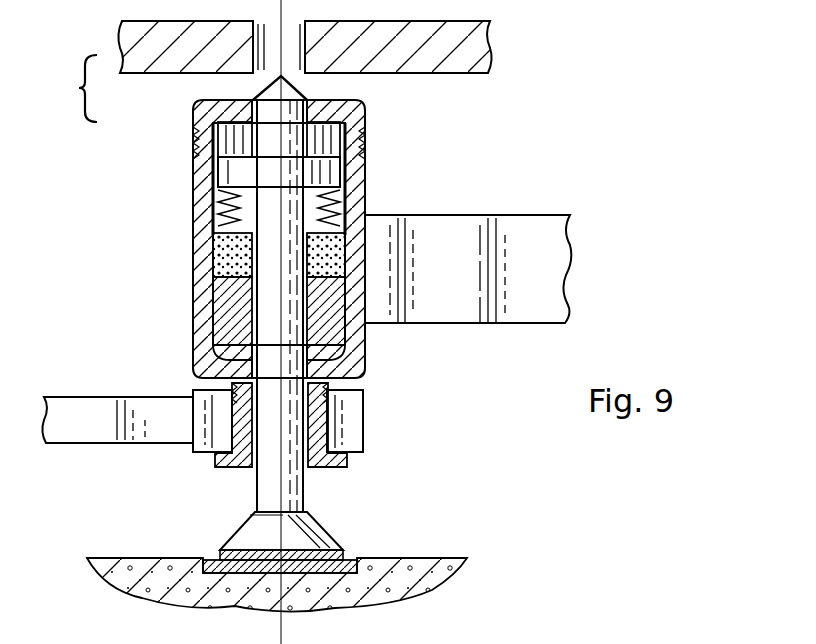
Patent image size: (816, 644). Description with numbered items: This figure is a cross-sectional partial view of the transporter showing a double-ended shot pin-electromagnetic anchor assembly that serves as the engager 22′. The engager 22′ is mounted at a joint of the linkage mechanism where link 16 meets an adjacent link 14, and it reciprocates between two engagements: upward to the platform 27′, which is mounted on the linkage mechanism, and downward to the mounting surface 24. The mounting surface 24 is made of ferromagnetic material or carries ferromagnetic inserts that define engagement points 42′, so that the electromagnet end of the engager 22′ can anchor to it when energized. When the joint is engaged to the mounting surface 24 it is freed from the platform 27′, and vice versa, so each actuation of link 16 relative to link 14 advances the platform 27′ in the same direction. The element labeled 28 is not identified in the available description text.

The platform 27′ is at (490, 45).
The engager 22′ is at (393, 190).
The link 16 is at (535, 215).
The packing 28 is at (213, 292).
The link 14 is at (85, 406).
The engagement points 42′ is at (352, 560).
The mounting surface 24 is at (440, 558).